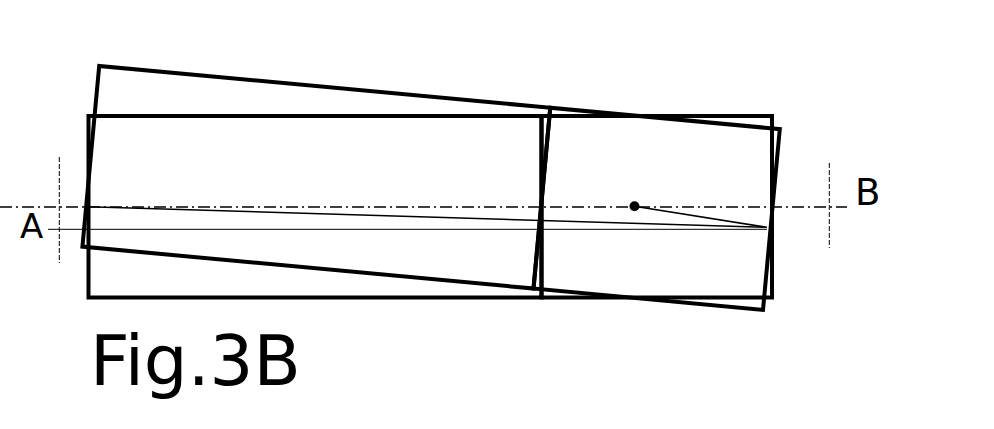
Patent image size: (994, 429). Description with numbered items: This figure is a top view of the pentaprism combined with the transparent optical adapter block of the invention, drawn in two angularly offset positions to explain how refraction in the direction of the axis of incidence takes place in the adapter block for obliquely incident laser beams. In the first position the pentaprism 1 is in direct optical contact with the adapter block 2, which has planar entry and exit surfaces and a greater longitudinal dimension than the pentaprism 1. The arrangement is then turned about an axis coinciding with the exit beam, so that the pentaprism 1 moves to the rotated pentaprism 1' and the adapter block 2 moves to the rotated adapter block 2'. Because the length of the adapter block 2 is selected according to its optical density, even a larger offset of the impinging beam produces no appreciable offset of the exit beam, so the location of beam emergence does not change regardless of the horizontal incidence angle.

The pentaprism 1 is at (686, 158).
The adapter block 2 is at (315, 163).
The pentaprism in rotated position 1' is at (720, 176).
The adapter block in rotated position 2' is at (316, 149).